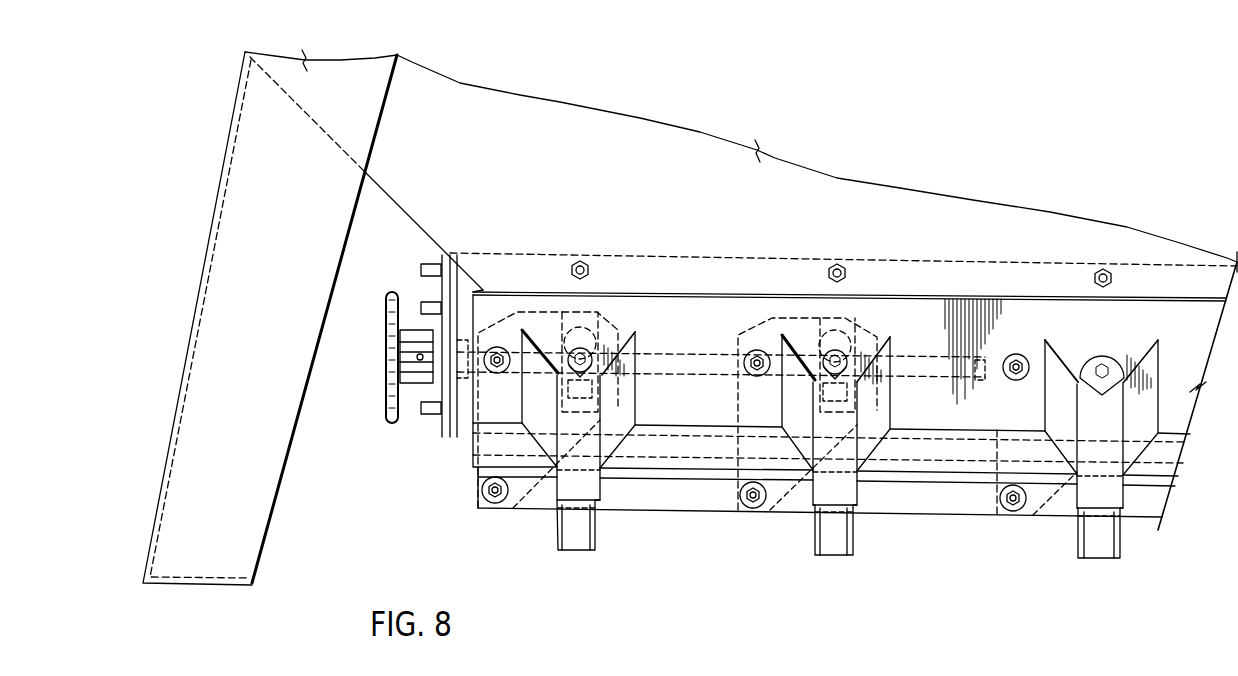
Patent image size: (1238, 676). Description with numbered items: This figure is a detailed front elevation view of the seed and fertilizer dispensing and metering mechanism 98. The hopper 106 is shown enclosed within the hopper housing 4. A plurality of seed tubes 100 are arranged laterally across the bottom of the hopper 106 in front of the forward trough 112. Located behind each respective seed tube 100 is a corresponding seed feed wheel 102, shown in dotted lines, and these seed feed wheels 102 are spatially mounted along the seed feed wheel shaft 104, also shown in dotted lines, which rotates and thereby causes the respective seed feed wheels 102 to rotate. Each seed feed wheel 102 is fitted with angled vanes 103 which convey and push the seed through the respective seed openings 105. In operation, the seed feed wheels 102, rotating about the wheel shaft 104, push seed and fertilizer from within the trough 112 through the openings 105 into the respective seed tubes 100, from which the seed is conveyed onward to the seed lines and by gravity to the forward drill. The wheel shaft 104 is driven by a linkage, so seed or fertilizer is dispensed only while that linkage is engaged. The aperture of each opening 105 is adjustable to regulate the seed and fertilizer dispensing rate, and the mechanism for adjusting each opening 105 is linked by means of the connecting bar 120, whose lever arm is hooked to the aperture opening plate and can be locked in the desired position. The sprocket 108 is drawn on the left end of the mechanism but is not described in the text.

The hopper housing 4 is at (224, 169).
The seed and fertilizer dispensing and metering mechanism 98 is at (742, 224).
The seed tube 100 is at (600, 422).
The seed feed wheel 102 is at (595, 335).
The angled vane 103 is at (570, 330).
The seed feed wheel shaft 104 is at (980, 370).
The seed opening 105 is at (830, 358).
The hopper 106 is at (405, 210).
The sprocket 108 is at (385, 388).
The forward trough 112 is at (1005, 297).
The connecting bar 120 is at (663, 503).